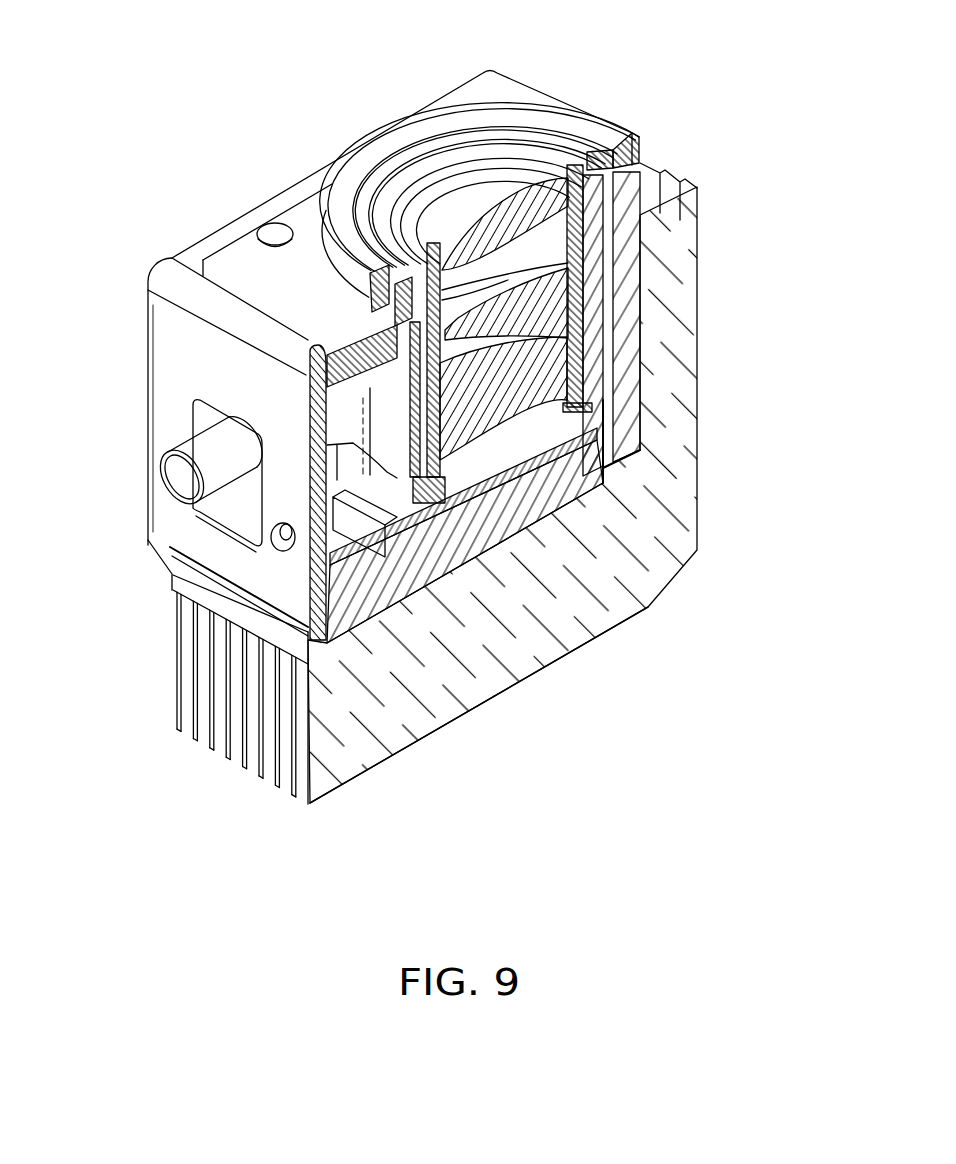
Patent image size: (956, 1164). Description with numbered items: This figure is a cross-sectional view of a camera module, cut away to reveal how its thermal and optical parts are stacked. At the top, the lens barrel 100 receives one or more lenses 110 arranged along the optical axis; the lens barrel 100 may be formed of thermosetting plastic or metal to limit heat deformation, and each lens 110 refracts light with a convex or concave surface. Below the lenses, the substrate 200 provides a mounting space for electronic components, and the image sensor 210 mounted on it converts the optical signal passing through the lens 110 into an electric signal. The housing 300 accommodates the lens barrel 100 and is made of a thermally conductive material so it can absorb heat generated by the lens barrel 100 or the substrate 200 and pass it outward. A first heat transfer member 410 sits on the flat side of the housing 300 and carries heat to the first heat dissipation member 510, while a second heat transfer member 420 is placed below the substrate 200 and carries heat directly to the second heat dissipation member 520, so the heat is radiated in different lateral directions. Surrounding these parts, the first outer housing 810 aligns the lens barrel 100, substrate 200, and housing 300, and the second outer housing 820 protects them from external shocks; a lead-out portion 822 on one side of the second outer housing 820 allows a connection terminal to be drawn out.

The lens barrel 100 is at (453, 137).
The lens 110 is at (515, 173).
The first outer housing 810 is at (242, 258).
The second outer housing 820 is at (167, 275).
The lead-out portion 822 is at (190, 447).
The housing 300 is at (418, 368).
The first heat transfer member 410 is at (630, 250).
The first heat dissipation member 510 is at (688, 492).
The image sensor 210 is at (563, 443).
The substrate 200 is at (483, 487).
The second heat dissipation member 520 is at (423, 725).
The second heat transfer member 420 is at (390, 590).